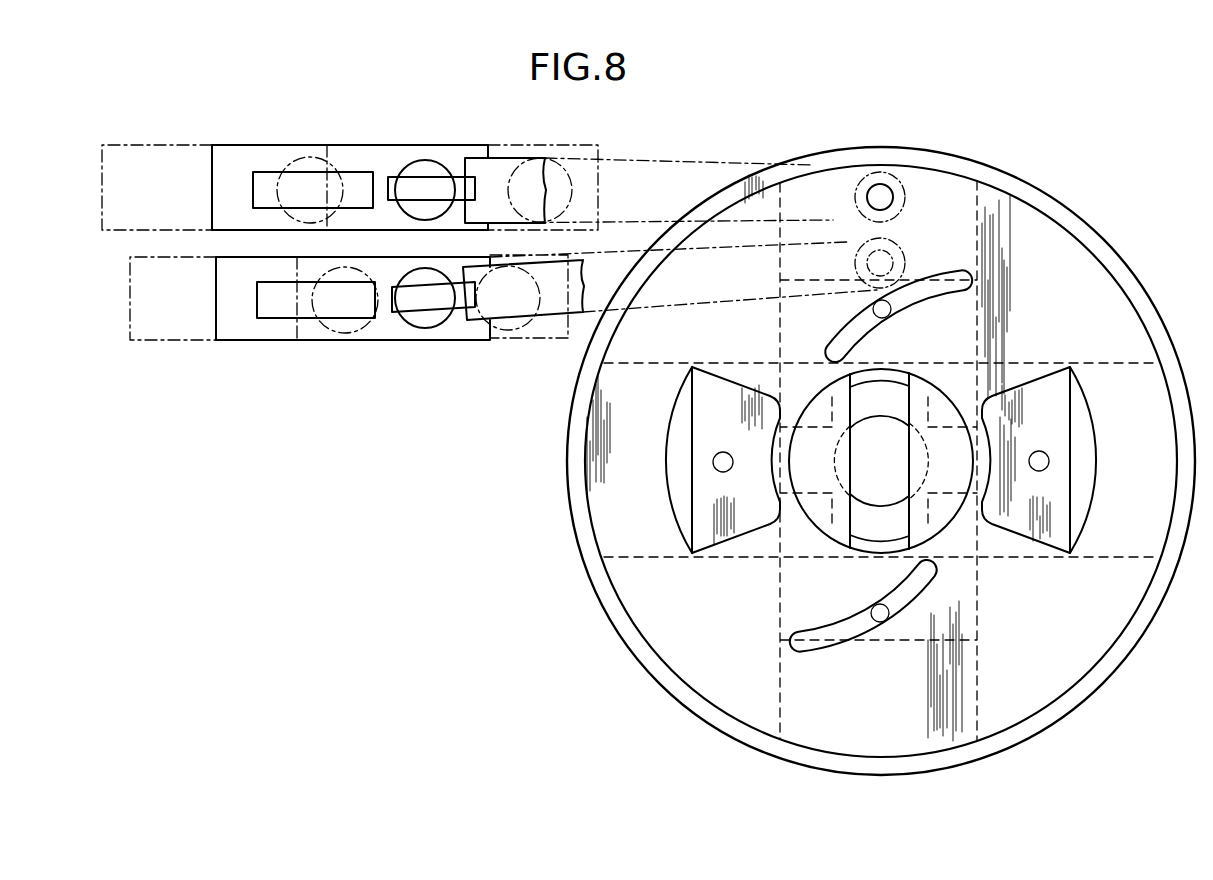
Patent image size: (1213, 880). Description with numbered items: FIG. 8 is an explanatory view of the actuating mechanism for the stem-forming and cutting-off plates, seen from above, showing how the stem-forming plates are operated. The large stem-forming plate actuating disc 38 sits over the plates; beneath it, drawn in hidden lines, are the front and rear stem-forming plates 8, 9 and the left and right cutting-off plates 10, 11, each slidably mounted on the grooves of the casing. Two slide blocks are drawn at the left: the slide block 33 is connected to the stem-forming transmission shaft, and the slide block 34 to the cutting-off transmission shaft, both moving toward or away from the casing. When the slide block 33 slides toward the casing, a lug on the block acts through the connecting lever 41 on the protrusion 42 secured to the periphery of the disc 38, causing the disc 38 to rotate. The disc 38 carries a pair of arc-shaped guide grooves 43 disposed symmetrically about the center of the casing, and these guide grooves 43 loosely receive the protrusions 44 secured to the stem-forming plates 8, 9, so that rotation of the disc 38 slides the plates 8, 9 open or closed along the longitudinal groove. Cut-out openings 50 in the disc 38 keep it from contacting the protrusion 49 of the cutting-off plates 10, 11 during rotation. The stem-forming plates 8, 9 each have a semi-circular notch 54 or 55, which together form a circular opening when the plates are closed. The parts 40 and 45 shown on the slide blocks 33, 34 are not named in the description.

The stem-forming plate 8 is at (958, 630).
The stem-forming plate 9 is at (790, 329).
The cutting-off plate 10 is at (698, 488).
The cutting-off plate 11 is at (1062, 483).
The slide block 33 is at (407, 148).
The slide block 34 is at (374, 322).
The stem-forming plate actuating disc 38 is at (1137, 340).
The roller 40 is at (438, 167).
The connecting lever 41 is at (637, 162).
The protrusion 42 is at (882, 195).
The arc-shaped guide groove 43 is at (853, 627).
The protrusion 44 is at (886, 620).
The roller 45 is at (428, 322).
The protrusion 49 is at (727, 452).
The cut-out opening 50 is at (679, 428).
The semi-circular notch 54 is at (867, 531).
The semi-circular notch 55 is at (888, 383).